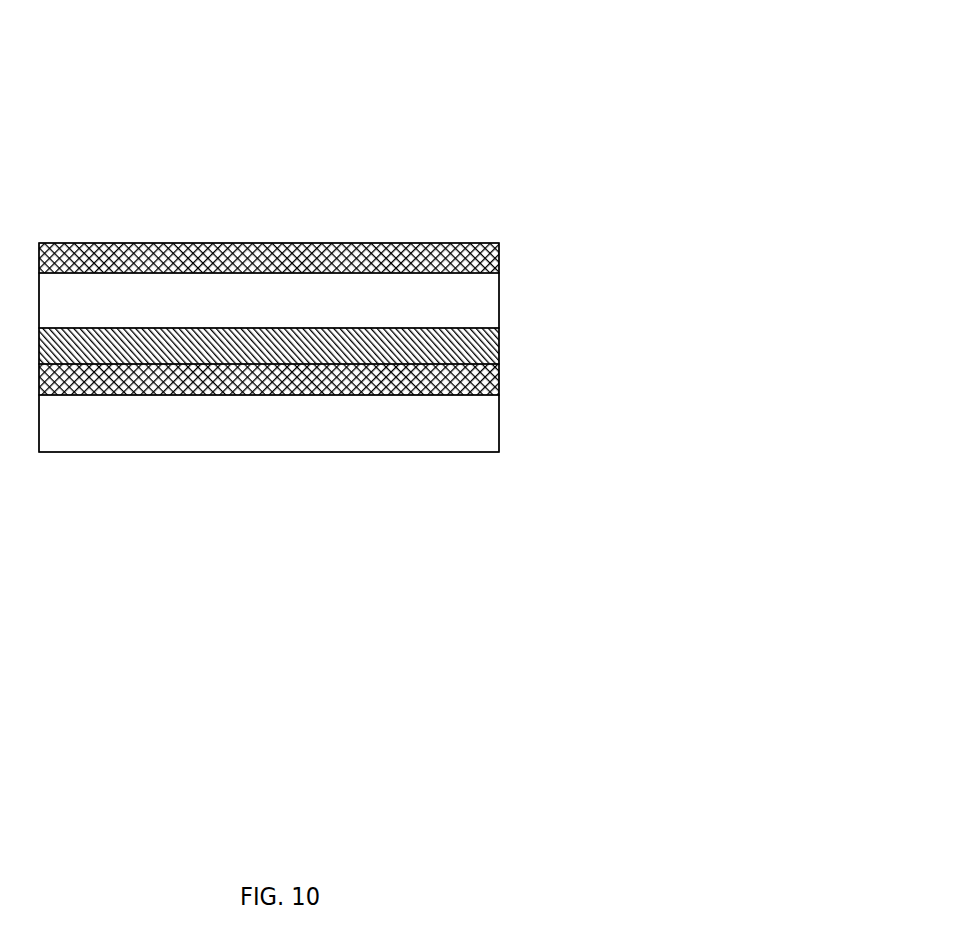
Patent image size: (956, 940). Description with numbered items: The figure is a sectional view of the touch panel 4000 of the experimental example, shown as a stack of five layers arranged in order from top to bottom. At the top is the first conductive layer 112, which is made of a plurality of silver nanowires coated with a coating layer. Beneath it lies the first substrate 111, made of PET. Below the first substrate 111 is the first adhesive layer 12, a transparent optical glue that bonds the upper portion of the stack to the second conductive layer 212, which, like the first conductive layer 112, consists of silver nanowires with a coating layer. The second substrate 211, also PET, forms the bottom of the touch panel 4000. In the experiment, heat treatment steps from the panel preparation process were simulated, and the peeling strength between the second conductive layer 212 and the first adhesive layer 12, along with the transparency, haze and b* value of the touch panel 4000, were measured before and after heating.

The touch panel 4000 is at (608, 57).
The first conductive layer 112 is at (498, 248).
The first substrate 111 is at (490, 297).
The first adhesive layer 12 is at (490, 344).
The second conductive layer 212 is at (490, 377).
The second substrate 211 is at (490, 426).